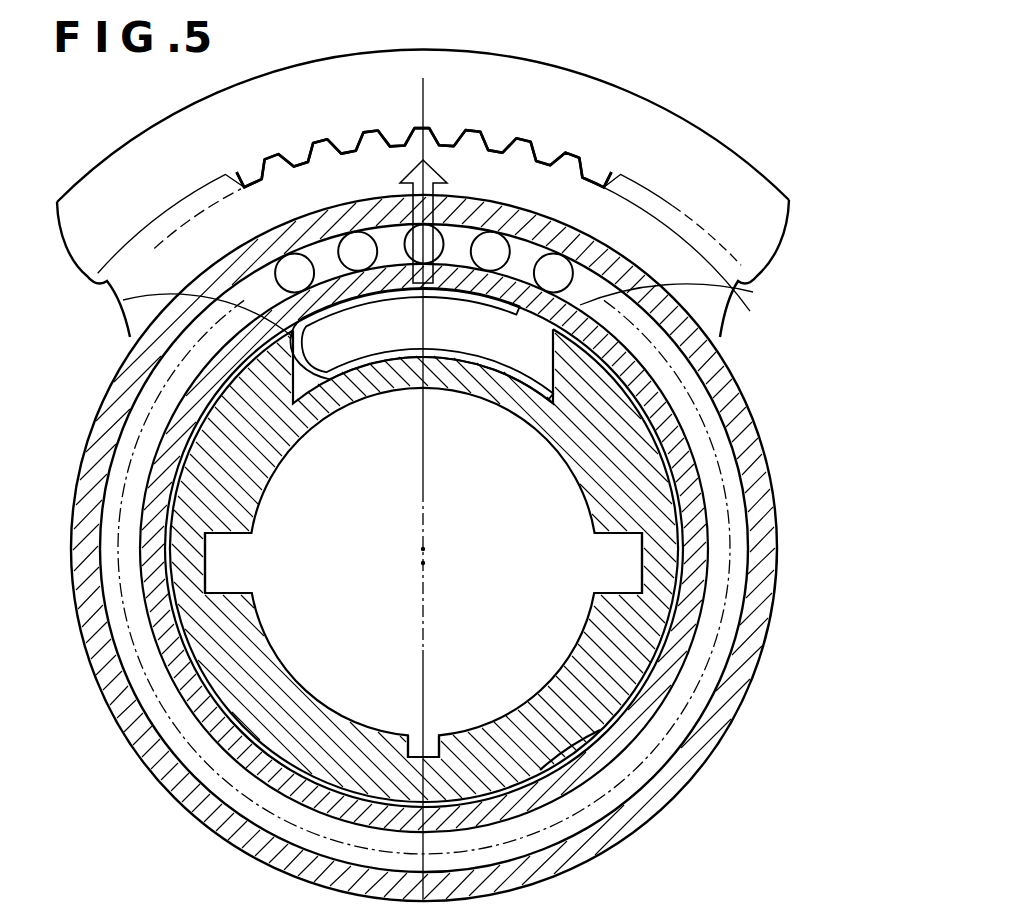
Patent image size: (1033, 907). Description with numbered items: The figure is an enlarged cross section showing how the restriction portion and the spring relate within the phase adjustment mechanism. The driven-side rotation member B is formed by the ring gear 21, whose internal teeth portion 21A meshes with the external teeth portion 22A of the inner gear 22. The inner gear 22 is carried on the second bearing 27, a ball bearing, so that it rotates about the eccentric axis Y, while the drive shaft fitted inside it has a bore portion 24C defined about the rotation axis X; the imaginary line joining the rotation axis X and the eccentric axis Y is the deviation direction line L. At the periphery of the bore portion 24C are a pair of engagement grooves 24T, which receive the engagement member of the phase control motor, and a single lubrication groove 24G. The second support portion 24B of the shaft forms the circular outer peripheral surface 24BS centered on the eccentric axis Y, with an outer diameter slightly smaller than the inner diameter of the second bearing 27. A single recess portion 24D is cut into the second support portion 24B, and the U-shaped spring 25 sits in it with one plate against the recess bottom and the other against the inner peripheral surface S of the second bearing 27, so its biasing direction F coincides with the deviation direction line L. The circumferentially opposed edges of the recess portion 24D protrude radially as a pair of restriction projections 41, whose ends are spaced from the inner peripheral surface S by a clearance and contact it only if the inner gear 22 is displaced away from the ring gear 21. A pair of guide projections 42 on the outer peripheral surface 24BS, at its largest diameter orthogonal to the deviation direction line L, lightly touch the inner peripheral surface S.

The driven-side rotation member B is at (147, 133).
The ring gear 21 is at (688, 127).
The internal teeth portion 21A is at (545, 157).
The inner gear 22 is at (625, 228).
The external teeth portion 22A is at (370, 143).
The second support portion 24B is at (622, 418).
The bore portion 24C is at (507, 623).
The engagement grooves 24T is at (223, 590).
The lubrication groove 24G is at (433, 755).
The recess portion 24D is at (440, 353).
The outer peripheral surface 24BS is at (572, 760).
The spring 25 is at (370, 287).
The second bearing 27 is at (142, 760).
The restriction projections 41 is at (123, 300).
The guide projections 42 is at (170, 558).
The biasing direction F is at (440, 176).
The deviation direction line L is at (430, 117).
The inner peripheral surface S is at (253, 737).
The rotation axis X is at (416, 565).
The eccentric axis Y is at (432, 545).